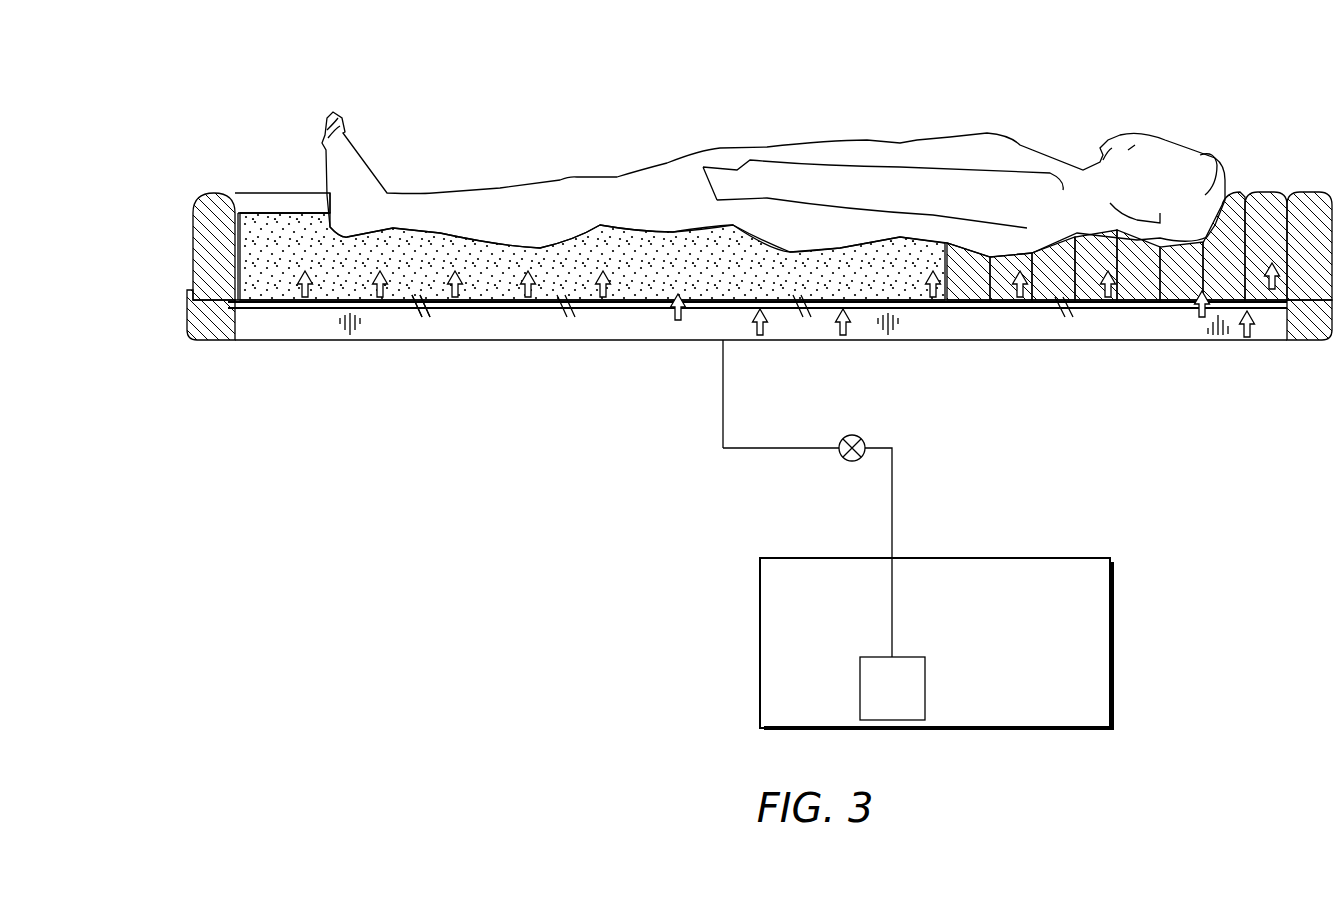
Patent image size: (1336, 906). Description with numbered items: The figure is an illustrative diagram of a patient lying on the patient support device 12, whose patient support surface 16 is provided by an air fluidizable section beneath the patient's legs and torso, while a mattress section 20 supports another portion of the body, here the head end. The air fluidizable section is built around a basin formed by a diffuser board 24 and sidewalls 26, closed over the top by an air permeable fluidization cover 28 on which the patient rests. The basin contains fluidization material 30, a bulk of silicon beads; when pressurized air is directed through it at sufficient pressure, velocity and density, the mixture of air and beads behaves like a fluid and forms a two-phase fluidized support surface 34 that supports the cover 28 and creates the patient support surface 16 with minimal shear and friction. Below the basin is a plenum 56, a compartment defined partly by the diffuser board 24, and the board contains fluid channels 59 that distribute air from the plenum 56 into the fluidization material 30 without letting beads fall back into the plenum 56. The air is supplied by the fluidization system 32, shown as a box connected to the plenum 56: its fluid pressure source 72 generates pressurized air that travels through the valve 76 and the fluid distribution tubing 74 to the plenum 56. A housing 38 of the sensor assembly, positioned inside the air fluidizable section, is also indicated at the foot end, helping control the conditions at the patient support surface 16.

The patient support device 12 is at (176, 267).
The patient support surface 16 is at (582, 192).
The two-phase fluidized support surface 34 is at (280, 212).
The mattress section 20 is at (1242, 190).
The diffuser board 24 is at (1127, 343).
The sidewalls 26 is at (240, 240).
The air permeable fluidization cover 28 is at (312, 203).
The fluidization material 30 is at (272, 236).
The fluidization system 32 is at (989, 671).
The housing 38 is at (215, 207).
The plenum 56 is at (698, 335).
The fluid channels 59 is at (428, 304).
The fluid pressure source 72 is at (878, 701).
The fluid distribution tubing 74 is at (748, 439).
The valve 76 is at (836, 421).